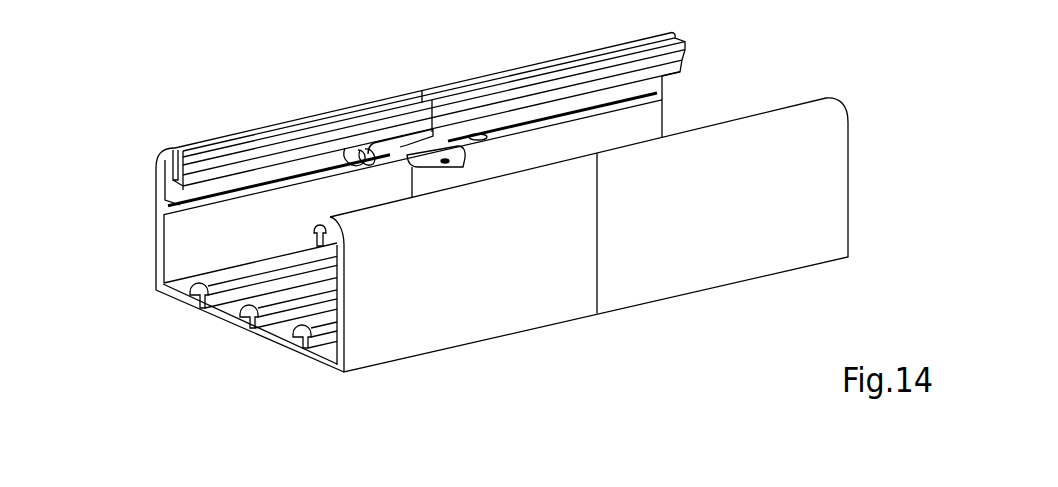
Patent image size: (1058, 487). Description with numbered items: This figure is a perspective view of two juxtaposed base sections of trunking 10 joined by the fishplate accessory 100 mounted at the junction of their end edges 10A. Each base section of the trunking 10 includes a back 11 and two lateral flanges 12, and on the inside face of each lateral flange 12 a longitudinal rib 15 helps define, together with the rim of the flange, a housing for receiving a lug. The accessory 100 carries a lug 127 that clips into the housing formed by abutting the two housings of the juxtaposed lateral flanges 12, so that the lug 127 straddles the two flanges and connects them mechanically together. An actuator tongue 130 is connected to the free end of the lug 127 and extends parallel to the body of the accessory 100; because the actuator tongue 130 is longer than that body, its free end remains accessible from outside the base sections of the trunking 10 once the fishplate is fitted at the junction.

The trunking 10 is at (487, 363).
The end edges 10A is at (420, 91).
The back 11 is at (218, 323).
The lateral flanges 12 is at (155, 248).
The longitudinal rib 15 is at (237, 202).
The accessory 100 is at (507, 152).
The lug 127 is at (338, 158).
The actuator tongue 130 is at (407, 160).